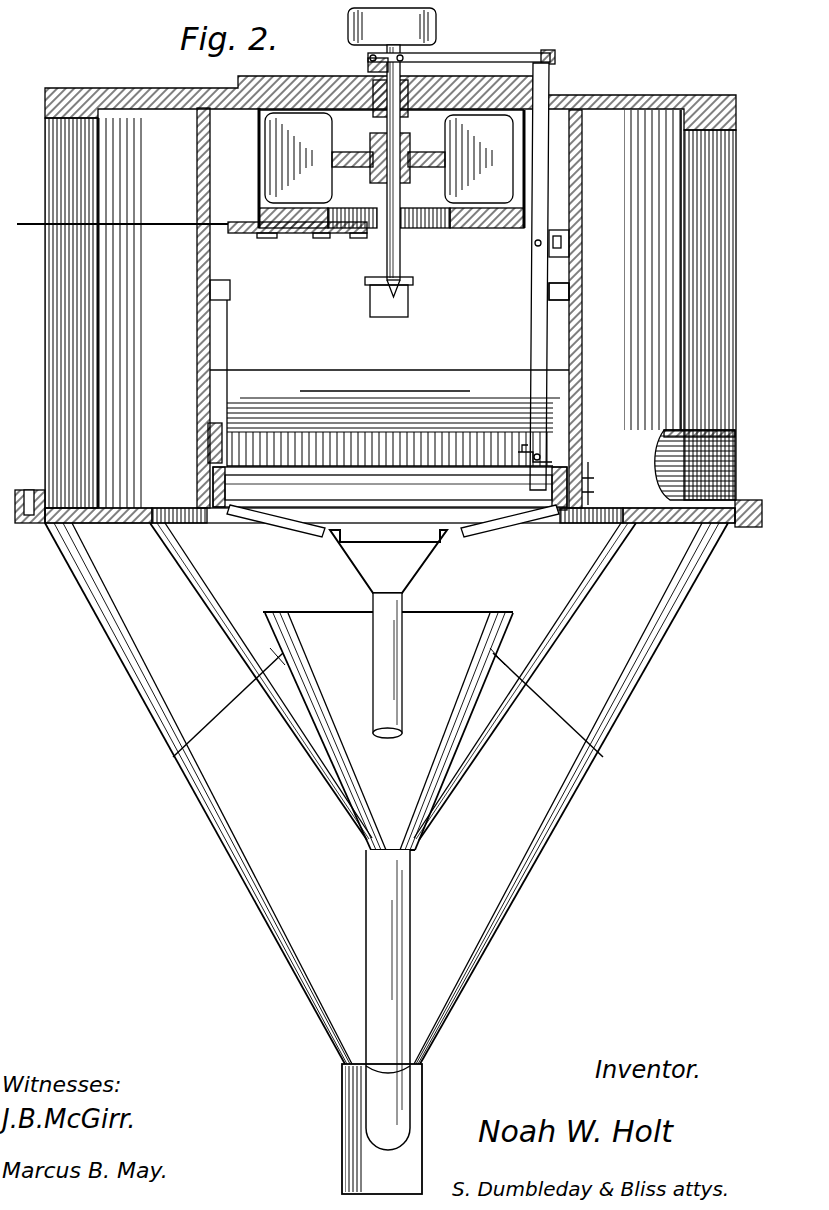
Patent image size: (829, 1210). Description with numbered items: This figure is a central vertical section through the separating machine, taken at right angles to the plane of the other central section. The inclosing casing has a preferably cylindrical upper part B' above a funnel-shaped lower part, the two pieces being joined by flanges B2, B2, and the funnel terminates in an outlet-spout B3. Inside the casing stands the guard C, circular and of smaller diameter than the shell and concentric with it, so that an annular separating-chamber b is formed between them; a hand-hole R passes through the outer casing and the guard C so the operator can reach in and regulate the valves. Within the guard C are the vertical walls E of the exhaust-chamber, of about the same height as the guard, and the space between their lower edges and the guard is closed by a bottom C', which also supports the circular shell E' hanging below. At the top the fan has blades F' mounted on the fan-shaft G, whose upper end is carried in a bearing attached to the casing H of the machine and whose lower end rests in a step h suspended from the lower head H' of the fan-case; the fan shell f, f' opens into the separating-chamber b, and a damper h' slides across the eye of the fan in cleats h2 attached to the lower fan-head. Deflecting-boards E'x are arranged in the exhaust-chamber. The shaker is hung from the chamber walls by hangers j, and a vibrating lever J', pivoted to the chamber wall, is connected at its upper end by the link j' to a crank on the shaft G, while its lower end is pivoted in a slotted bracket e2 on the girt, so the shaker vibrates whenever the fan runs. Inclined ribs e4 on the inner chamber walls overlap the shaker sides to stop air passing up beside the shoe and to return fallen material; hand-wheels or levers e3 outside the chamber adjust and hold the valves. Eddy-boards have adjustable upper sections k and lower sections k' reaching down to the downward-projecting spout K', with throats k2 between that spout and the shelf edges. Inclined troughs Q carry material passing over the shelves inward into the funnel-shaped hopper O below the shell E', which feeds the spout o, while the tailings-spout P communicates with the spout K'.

The casing of the machine H is at (390, 98).
The annular separating-chamber b is at (390, 313).
The guard C is at (391, 309).
The vertical walls of exhaust-chamber E is at (404, 308).
The shell of the fan f' is at (375, 168).
The fan blades F' is at (389, 158).
The shell of the fan f is at (446, 154).
The lower head of the fan-case H' is at (391, 237).
The fan-shaft G is at (385, 198).
The link or arm j' is at (436, 59).
The hangers or links j is at (524, 270).
The vibrating lever J' is at (525, 293).
The upper part of casing B' is at (118, 200).
The valve or damper h' is at (297, 249).
The ways or cleats h2 is at (322, 240).
The bearing or step h is at (398, 297).
The deflecting-boards E'x is at (389, 401).
The upper sections of eddy-boards k is at (390, 449).
The lower sections of eddy-boards k' is at (390, 487).
The throats k2 is at (343, 468).
The overlapping flanges or ribs e4 is at (208, 452).
The bracket e2 is at (534, 450).
The hand-wheels or levers e3 is at (589, 470).
The hand-hole R is at (726, 464).
The flanges B2 is at (18, 490).
The bottom C' is at (386, 533).
The hopper outer wall b' is at (386, 791).
The shell E' is at (393, 681).
The inclined troughs Q is at (308, 532).
The downward-projecting spout K' is at (388, 561).
The funnel-shaped hopper O is at (388, 731).
The tailings-spout P is at (403, 681).
The spout o is at (411, 931).
The outlet-spout B3 is at (382, 1129).